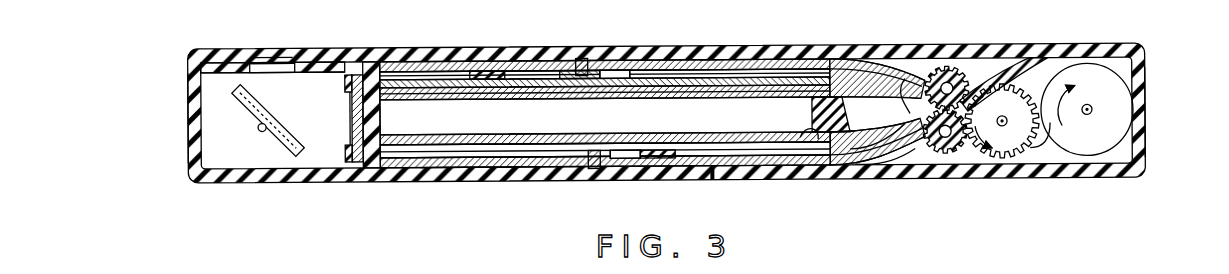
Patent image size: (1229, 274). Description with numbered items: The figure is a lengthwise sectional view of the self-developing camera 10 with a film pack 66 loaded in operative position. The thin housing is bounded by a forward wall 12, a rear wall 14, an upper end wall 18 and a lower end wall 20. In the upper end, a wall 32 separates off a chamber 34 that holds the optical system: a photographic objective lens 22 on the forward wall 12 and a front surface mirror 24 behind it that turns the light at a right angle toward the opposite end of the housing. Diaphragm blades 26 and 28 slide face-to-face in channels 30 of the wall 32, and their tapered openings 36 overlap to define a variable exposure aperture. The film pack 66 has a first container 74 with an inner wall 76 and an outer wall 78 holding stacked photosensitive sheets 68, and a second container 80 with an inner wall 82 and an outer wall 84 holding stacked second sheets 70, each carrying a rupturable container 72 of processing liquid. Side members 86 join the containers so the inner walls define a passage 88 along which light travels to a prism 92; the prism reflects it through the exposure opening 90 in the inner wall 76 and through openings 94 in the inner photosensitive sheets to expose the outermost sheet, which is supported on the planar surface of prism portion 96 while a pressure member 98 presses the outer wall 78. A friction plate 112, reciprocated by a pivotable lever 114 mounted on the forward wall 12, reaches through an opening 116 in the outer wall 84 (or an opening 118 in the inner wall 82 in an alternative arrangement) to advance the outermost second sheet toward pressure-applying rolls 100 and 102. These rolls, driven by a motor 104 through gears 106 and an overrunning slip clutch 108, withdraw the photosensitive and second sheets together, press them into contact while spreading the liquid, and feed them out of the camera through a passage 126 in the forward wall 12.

The camera 10 is at (951, 43).
The forward wall 12 is at (405, 48).
The rear wall 14 is at (483, 181).
The upper end wall 18 is at (188, 122).
The lower end wall 20 is at (1146, 70).
The photographic objective lens 22 is at (292, 49).
The front surface mirror 24 is at (243, 118).
The diaphragm blade 26 is at (356, 73).
The diaphragm blade 28 is at (376, 130).
The channels 30 is at (371, 63).
The wall 32 is at (349, 72).
The chamber 34 is at (263, 150).
The opening 36 is at (350, 118).
The film pack 66 is at (750, 80).
The photosensitive sheets 68 is at (735, 143).
The second sheets 70 is at (786, 84).
The rupturable container 72 is at (902, 82).
The first container 74 is at (447, 178).
The inner wall 76 is at (538, 165).
The outer wall 78 is at (712, 180).
The second container 80 is at (708, 57).
The inner wall 82 is at (745, 74).
The outer wall 84 is at (450, 66).
The side members 86 is at (448, 124).
The passage 88 is at (660, 116).
The exposure opening 90 is at (800, 140).
The prism 92 is at (775, 150).
The openings 94 is at (858, 150).
The portion of prism 96 is at (830, 135).
The pressure member 98 is at (897, 166).
The pressure-applying roll 100 is at (953, 86).
The pressure-applying roll 102 is at (947, 153).
The motor 104 is at (1112, 137).
The gears 106 is at (1030, 152).
The overrunning slip clutch 108 is at (1012, 141).
The friction plate 112 is at (505, 72).
The pivotable lever 114 is at (578, 60).
The opening 116 is at (632, 74).
The opening 118 is at (637, 170).
The passage 126 is at (1036, 56).